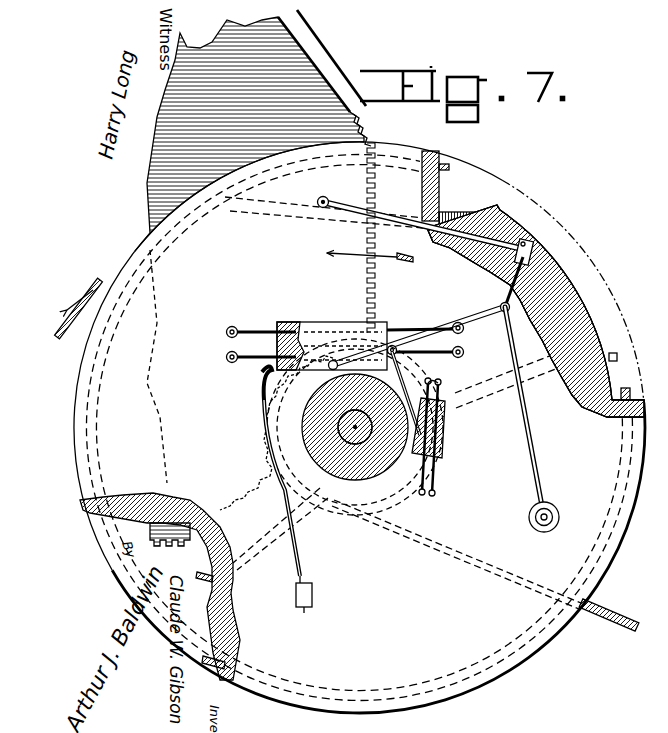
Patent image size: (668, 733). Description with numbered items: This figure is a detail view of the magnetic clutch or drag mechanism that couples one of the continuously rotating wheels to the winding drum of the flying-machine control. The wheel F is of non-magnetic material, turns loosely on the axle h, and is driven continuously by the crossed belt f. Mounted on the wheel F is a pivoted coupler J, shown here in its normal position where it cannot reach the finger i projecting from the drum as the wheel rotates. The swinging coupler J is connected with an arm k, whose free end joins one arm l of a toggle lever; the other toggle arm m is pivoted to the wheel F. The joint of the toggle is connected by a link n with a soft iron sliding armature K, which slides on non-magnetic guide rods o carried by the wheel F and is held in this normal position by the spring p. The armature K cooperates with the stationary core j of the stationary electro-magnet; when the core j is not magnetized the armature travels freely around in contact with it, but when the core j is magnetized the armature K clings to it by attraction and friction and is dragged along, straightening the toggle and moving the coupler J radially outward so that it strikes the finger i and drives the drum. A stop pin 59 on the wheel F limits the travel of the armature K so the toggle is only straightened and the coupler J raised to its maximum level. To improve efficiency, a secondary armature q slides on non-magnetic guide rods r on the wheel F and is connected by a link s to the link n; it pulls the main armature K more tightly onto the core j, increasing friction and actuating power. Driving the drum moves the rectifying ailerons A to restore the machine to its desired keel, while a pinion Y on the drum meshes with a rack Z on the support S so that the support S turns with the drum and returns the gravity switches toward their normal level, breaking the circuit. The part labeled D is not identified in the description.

The support S is at (312, 52).
The rack Z is at (165, 560).
The pivoted coupler J is at (485, 205).
The toggle lever arm l is at (535, 311).
The arm k is at (426, 244).
The sliding armature K is at (310, 340).
The guide rods o is at (247, 358).
The stop pin 59 is at (398, 342).
The link n is at (480, 322).
The toggle lever arm m is at (533, 430).
The axle h is at (355, 433).
The secondary armature q is at (444, 421).
The guide rods r is at (438, 474).
The link s is at (432, 374).
The spring p is at (262, 405).
The stationary core j is at (382, 493).
The pinion Y is at (357, 433).
The finger i is at (615, 354).
The pin D is at (592, 615).
The crossed belt f is at (224, 664).
The wheel F is at (365, 668).
The rectifying ailerons A is at (659, 291).